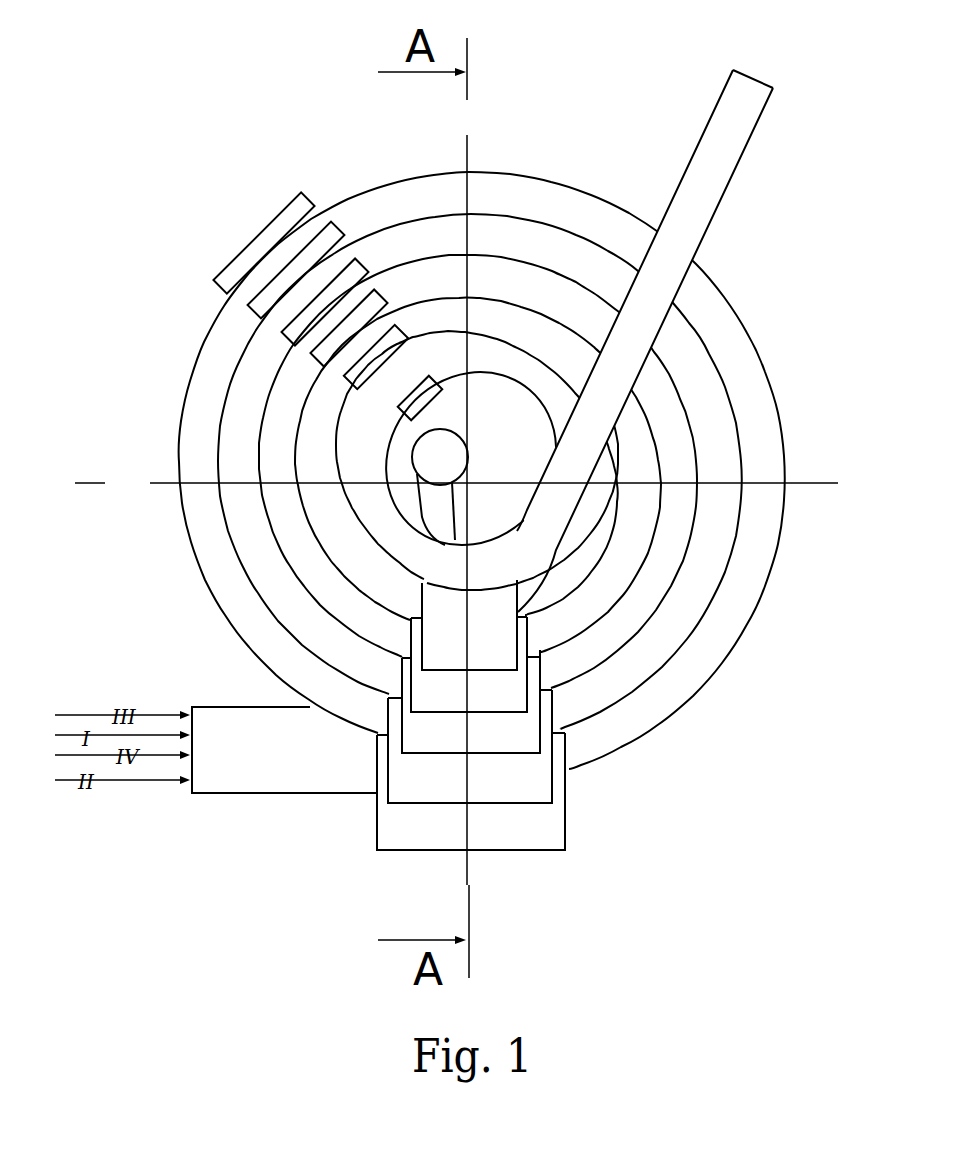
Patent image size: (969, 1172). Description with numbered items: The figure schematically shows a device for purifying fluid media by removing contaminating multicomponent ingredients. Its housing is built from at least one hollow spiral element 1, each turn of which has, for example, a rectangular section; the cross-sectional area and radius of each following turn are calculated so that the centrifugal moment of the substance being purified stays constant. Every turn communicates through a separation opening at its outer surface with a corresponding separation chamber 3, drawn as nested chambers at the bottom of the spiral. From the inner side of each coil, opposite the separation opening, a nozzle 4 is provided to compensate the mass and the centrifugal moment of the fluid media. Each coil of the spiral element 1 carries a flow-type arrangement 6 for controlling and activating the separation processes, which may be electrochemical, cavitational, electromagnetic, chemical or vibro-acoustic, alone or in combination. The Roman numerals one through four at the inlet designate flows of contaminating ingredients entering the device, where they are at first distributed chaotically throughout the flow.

The hollow spiral element 1 is at (203, 443).
The separation chamber 3 is at (531, 830).
The nozzle 4 is at (432, 490).
The flow-type arrangement 6 is at (426, 392).